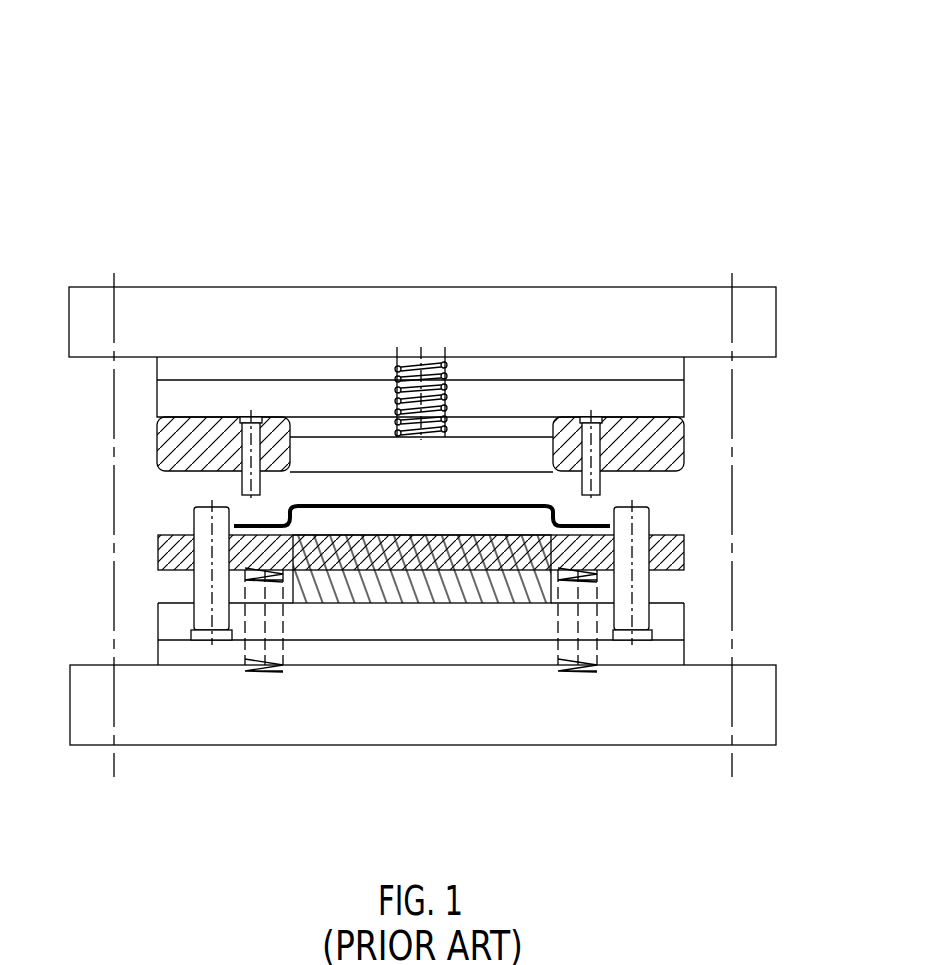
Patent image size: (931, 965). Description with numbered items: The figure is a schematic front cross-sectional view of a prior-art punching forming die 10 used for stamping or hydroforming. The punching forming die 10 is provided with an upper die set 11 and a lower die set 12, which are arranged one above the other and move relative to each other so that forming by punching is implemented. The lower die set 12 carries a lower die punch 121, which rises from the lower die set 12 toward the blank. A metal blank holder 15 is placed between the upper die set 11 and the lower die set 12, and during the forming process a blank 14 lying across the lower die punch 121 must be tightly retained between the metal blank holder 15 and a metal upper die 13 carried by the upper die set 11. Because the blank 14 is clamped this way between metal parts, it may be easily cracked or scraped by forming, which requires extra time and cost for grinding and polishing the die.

The punching forming die 10 is at (512, 131).
The upper die set 11 is at (512, 286).
The lower die set 12 is at (500, 747).
The metal upper die 13 is at (192, 457).
The blank 14 is at (380, 503).
The metal blank holder 15 is at (179, 537).
The lower die punch 121 is at (507, 547).